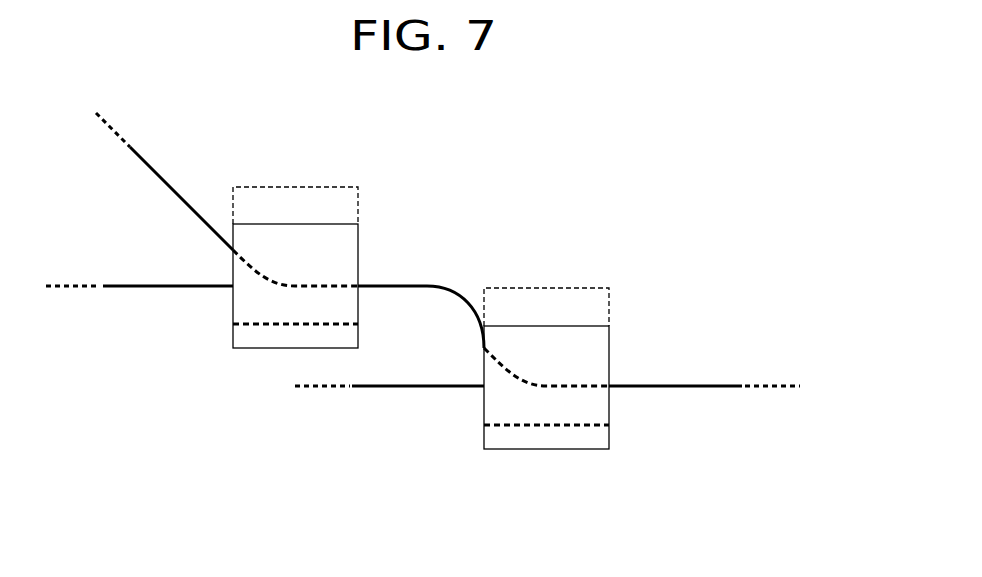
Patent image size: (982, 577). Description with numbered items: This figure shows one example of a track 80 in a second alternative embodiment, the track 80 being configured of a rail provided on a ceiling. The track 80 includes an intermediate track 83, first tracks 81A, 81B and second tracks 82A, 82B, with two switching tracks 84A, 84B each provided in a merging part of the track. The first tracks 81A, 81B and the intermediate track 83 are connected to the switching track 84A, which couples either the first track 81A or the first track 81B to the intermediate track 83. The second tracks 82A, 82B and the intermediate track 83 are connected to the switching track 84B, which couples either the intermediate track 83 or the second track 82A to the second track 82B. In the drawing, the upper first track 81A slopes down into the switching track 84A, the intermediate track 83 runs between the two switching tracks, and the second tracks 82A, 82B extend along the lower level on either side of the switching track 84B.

The track 80 is at (423, 278).
The first track 81A is at (158, 175).
The first track 81B is at (160, 288).
The intermediate track 83 is at (422, 284).
The second track 82A is at (408, 388).
The second track 82B is at (685, 388).
The switching track 84A is at (358, 248).
The switching track 84B is at (547, 450).